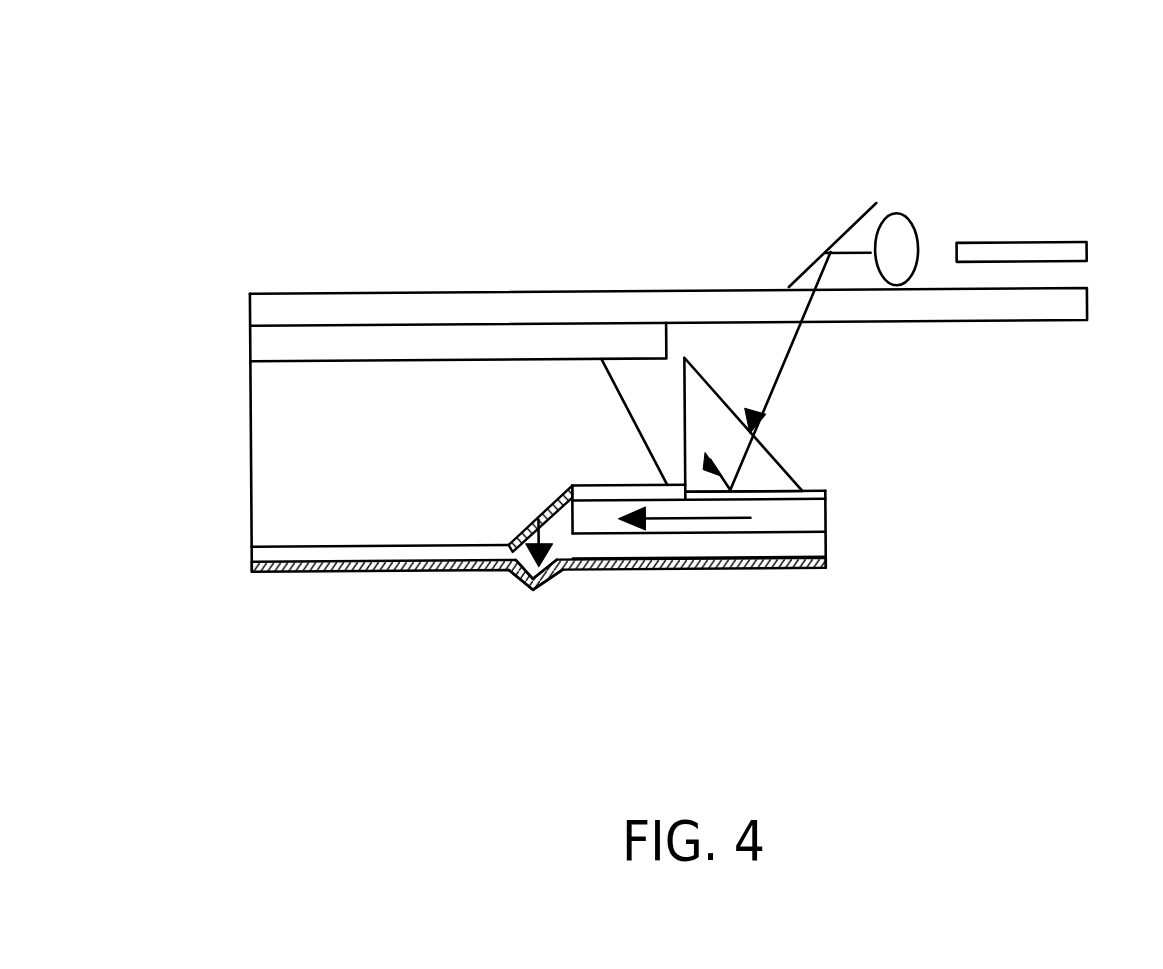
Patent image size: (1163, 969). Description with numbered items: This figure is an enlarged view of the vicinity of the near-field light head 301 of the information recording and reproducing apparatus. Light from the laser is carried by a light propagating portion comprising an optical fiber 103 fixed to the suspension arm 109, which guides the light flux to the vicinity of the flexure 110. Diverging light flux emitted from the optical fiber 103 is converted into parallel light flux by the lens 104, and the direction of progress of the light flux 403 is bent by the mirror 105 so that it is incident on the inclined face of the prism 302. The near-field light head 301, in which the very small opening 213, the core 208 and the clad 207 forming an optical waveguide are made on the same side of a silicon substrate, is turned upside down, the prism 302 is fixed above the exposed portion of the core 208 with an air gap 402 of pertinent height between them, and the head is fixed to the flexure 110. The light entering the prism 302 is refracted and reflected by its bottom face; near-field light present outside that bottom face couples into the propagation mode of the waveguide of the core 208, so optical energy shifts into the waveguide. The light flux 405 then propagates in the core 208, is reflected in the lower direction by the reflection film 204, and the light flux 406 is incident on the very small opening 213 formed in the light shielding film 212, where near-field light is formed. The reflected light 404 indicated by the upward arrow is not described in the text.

The optical fiber 103 is at (1042, 245).
The lens 104 is at (903, 214).
The mirror 105 is at (836, 243).
The suspension arm 109 is at (985, 314).
The flexure 110 is at (408, 348).
The reflection film 204 is at (535, 523).
The clad 207 is at (827, 550).
The core 208 is at (827, 519).
The light shielding film 212 is at (370, 572).
The very small opening 213 is at (538, 590).
The near-field light head 301 is at (235, 365).
The prism 302 is at (798, 491).
The air gap 402 is at (752, 497).
The light flux 403 is at (790, 345).
The reflected light 404 is at (730, 490).
The light flux 405 is at (692, 519).
The light flux 406 is at (561, 521).